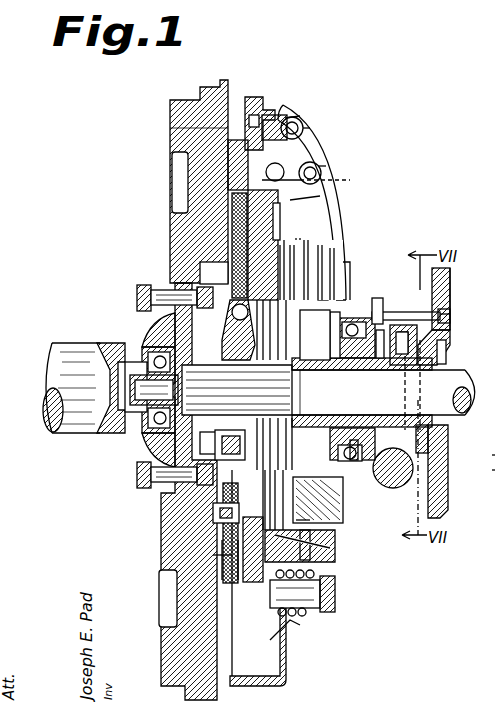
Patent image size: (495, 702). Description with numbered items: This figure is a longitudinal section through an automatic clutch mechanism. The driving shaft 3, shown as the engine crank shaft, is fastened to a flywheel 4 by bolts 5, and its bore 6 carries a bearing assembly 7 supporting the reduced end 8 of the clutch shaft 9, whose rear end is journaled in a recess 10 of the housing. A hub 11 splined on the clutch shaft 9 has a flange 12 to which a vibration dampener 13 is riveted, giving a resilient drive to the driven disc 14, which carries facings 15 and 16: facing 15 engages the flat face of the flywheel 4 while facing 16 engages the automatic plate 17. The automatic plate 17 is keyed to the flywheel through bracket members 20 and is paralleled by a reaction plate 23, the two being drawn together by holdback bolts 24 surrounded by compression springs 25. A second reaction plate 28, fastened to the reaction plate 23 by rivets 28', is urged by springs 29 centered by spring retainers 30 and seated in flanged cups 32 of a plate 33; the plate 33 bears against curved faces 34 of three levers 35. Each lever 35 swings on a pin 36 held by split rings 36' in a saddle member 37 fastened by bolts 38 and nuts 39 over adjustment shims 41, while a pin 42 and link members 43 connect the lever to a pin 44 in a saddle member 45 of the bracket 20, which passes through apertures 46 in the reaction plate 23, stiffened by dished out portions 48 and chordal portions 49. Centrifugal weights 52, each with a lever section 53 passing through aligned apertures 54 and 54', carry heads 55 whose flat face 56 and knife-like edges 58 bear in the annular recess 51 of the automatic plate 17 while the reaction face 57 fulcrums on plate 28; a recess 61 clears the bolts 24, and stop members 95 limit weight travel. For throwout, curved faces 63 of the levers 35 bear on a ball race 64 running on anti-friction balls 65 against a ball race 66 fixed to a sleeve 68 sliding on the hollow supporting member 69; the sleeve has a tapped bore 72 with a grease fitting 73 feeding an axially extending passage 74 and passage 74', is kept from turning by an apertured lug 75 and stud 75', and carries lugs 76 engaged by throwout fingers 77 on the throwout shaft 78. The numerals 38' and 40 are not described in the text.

The driving shaft 3 is at (80, 360).
The flywheel 4 is at (171, 102).
The bolts 5 is at (148, 292).
The bore 6 is at (115, 352).
The bearing assembly 7 is at (150, 356).
The reduced end 8 is at (138, 400).
The clutch shaft 9 is at (383, 392).
The recess 10 is at (446, 344).
The hub 11 is at (220, 445).
The flange 12 is at (228, 340).
The vibration dampener 13 is at (227, 330).
The driven disc 14 is at (214, 358).
The facing 15 is at (235, 218).
The facing 16 is at (286, 258).
The automatic plate 17 is at (250, 600).
The bracket member 20 is at (185, 180).
The reaction plate 23 is at (250, 97).
The holdback bolts 24 is at (336, 596).
The compression springs 25 is at (300, 608).
The second reaction plate 28 is at (313, 500).
The rivets 28' is at (344, 202).
The springs 29 is at (343, 478).
The spring retainers 30 is at (230, 514).
The flanged cups 32 is at (346, 262).
The plate 33 is at (323, 258).
The curved faces 34 is at (352, 300).
The levers 35 is at (322, 197).
The pin 36 is at (310, 117).
The split rings 36' is at (482, 479).
The saddle member 37 is at (296, 119).
The bolts 38 is at (326, 121).
The roller race 38' is at (478, 459).
The nuts 39 is at (228, 128).
The housing 40 is at (462, 299).
The adjustment shims 41 is at (256, 115).
The pin 42 is at (318, 170).
The link members 43 is at (322, 168).
The pin 44 is at (298, 163).
The saddle member 45 is at (230, 158).
The apertures 46 is at (300, 190).
The dished out portions 48 is at (280, 112).
The chordal portions 49 is at (350, 180).
The annular recess 51 is at (282, 212).
The centrifugal weights 52 is at (335, 540).
The lever section 53 is at (300, 554).
The apertures 54 is at (323, 572).
The apertures 54' is at (337, 517).
The heads 55 is at (222, 560).
The flat face 56 is at (213, 555).
The reaction face 57 is at (306, 511).
The knife-like edges 58 is at (236, 565).
The recess 61 is at (352, 446).
The curved faces 63 is at (350, 318).
The ball race 64 is at (316, 335).
The anti-friction balls 65 is at (352, 330).
The ball race 66 is at (350, 360).
The sleeve 68 is at (326, 372).
The hollow supporting member 69 is at (310, 366).
The tapped bore 72 is at (405, 340).
The grease fitting 73 is at (404, 312).
The axially extending passage 74 is at (392, 382).
The passage 74' is at (410, 342).
The apertured lug 75 is at (391, 293).
The stud 75' is at (465, 302).
The lugs 76 is at (446, 362).
The throwout fingers 77 is at (400, 421).
The throwout shaft 78 is at (393, 468).
The stop members 95 is at (290, 636).